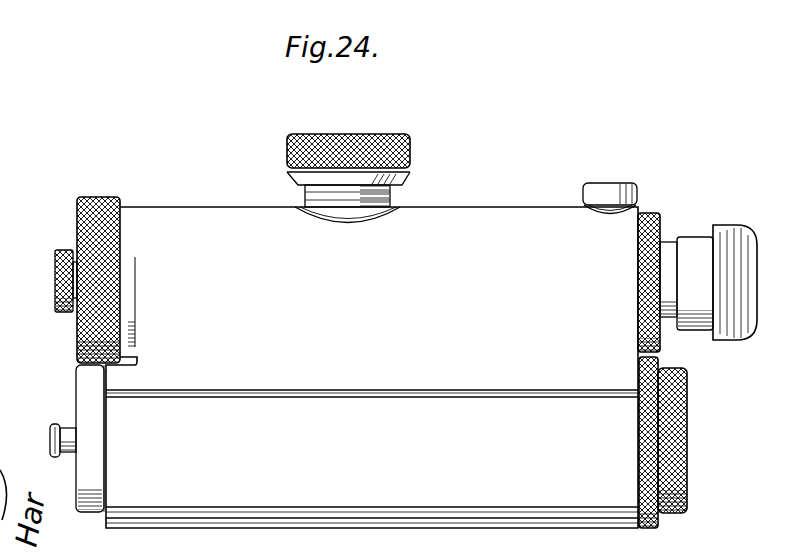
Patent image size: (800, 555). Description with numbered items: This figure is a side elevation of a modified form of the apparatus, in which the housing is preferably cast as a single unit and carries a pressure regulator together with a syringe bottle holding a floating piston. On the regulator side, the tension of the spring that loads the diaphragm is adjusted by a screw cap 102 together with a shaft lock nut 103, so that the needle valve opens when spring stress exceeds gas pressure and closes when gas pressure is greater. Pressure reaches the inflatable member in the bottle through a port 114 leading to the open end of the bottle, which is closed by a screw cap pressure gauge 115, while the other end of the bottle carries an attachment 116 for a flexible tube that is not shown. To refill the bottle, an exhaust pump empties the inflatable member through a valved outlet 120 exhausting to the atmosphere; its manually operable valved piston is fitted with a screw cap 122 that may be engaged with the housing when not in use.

The screw cap 102 is at (77, 213).
The shaft lock nut 103 is at (56, 250).
The port 114 is at (408, 154).
The screw cap pressure gauge 115 is at (678, 444).
The attachment 116 is at (57, 422).
The valved outlet 120 is at (650, 198).
The screw cap 122 is at (730, 234).